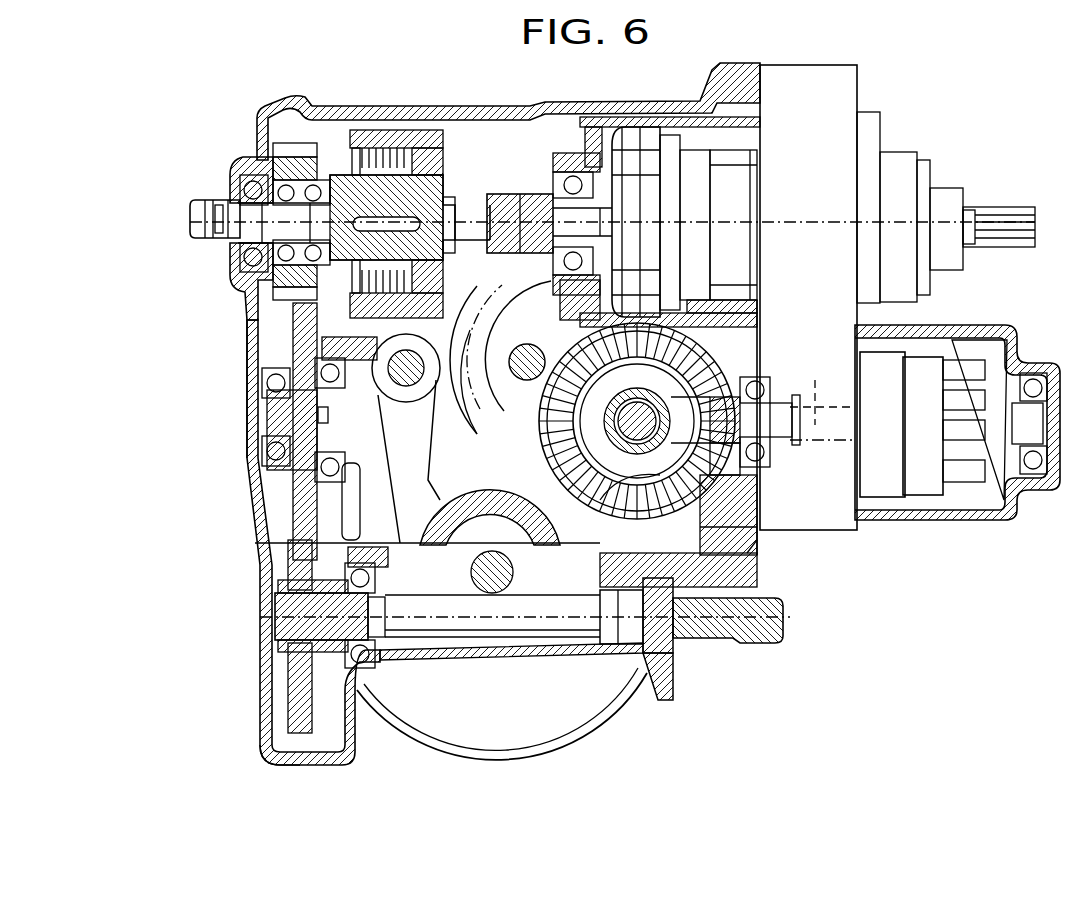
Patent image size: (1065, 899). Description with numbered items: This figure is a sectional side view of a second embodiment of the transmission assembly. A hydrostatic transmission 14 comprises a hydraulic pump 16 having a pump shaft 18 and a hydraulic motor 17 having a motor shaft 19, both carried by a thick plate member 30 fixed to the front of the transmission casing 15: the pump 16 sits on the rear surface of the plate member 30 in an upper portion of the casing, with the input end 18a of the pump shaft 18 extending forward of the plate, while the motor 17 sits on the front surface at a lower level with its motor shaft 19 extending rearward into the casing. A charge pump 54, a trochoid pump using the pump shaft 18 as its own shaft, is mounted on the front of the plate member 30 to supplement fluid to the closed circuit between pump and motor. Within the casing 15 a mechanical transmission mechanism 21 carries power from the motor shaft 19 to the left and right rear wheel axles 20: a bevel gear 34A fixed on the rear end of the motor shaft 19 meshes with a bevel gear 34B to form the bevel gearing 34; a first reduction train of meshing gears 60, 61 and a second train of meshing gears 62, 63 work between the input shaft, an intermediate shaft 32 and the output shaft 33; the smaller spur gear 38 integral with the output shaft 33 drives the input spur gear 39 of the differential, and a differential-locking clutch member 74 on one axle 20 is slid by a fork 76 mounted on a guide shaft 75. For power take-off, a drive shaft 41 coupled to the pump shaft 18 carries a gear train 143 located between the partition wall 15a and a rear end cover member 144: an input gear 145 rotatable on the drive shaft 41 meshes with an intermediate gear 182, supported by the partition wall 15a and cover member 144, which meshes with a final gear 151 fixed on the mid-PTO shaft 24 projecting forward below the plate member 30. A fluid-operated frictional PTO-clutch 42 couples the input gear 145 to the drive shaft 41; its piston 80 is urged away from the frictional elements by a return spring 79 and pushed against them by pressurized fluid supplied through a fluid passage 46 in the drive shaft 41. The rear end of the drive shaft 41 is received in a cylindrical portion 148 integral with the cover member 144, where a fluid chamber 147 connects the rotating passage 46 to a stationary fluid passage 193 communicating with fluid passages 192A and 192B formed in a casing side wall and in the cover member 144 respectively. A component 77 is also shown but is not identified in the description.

The hydrostatic transmission 14 is at (845, 333).
The transmission casing 15 is at (430, 650).
The partition wall 15a is at (422, 516).
The hydraulic pump 16 is at (733, 168).
The hydraulic motor 17 is at (922, 462).
The pump shaft 18 is at (595, 202).
The input end of pump shaft 18a is at (1008, 222).
The motor shaft 19 is at (778, 416).
The rear wheel axles 20 is at (488, 575).
The mechanical transmission mechanism 21 is at (752, 556).
The mid-PTO shaft 24 is at (615, 660).
The plate member 30 is at (822, 93).
The intermediate shaft 32 is at (525, 352).
The output shaft 33 is at (568, 500).
The bevel gearing 34 is at (732, 354).
The bevel gear (drive side) 34A is at (722, 472).
The bevel gear (driven side) 34B is at (726, 330).
The smaller spur gear 38 is at (702, 538).
The input spur gear 39 is at (577, 727).
The drive shaft 41 is at (440, 195).
The PTO-clutch 42 is at (405, 128).
The fluid passage 46 is at (455, 196).
The charge pump 54 is at (897, 167).
The gear of first reduction train 60 is at (628, 490).
The gear of first reduction train 61 is at (497, 452).
The gear of second reduction train 62 is at (562, 250).
The gear of second reduction train 63 is at (702, 292).
The differential-locking clutch member 74 is at (544, 545).
The guide shaft 75 is at (407, 372).
The fork 76 is at (418, 478).
The bushing 77 is at (522, 194).
The return spring 79 is at (355, 148).
The piston 80 is at (446, 182).
The gear train 143 is at (292, 342).
The rear end cover member 144 is at (256, 328).
The input gear 145 is at (297, 142).
The fluid chamber 147 is at (245, 247).
The cylindrical portion 148 is at (215, 200).
The final gear 151 is at (275, 766).
The intermediate gear 182 is at (300, 538).
The fluid passage 192A is at (520, 255).
The fluid passage 192B is at (253, 185).
The stationary fluid passage 193 is at (215, 225).